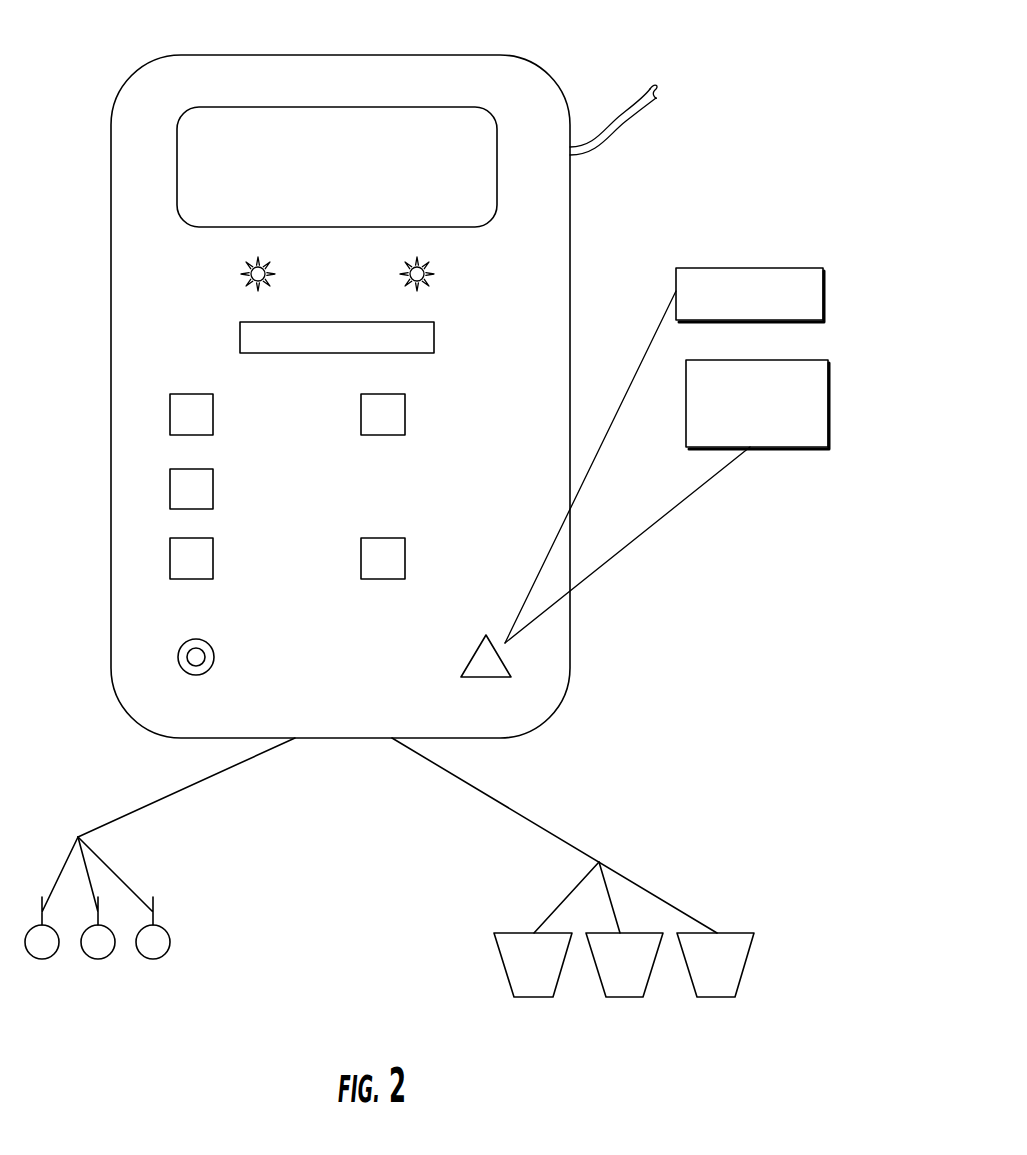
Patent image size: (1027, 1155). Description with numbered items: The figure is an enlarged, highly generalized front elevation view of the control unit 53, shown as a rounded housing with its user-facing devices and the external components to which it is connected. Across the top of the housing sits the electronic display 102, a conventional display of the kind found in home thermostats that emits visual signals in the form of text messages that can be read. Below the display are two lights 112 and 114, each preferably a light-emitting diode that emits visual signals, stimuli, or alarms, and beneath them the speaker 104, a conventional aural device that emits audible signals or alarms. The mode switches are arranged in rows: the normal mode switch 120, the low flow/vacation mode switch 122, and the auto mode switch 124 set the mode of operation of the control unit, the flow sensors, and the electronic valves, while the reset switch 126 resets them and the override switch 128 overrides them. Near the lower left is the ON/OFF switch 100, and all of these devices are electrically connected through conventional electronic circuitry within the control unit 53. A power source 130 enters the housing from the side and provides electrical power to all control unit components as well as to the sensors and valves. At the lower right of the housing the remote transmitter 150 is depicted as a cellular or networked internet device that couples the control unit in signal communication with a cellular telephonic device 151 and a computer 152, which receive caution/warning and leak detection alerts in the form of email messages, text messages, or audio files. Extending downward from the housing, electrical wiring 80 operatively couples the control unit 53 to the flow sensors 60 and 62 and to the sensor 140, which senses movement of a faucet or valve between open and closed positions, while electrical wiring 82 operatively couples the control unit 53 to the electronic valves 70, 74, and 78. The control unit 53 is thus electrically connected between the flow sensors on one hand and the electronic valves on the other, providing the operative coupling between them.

The control unit 53 is at (103, 233).
The electronic display 102 is at (478, 123).
The power source 130 is at (617, 118).
The light 112 is at (244, 270).
The light 114 is at (431, 270).
The speaker 104 is at (429, 338).
The normal mode switch 120 is at (170, 413).
The low flow/vacation mode switch 122 is at (170, 488).
The auto mode switch 124 is at (170, 562).
The reset switch 126 is at (393, 425).
The override switch 128 is at (393, 568).
The ON/OFF switch 100 is at (178, 661).
The remote transmitter 150 is at (488, 662).
The computer 152 is at (826, 300).
The cellular telephonic device 151 is at (798, 450).
The electrical wiring 80 is at (207, 783).
The electrical wiring 82 is at (523, 815).
The flow sensor 60 is at (40, 950).
The flow sensor 62 is at (97, 950).
The sensor 140 is at (152, 950).
The electronic valve 70 is at (530, 998).
The electronic valve 74 is at (620, 998).
The electronic valve 78 is at (710, 998).